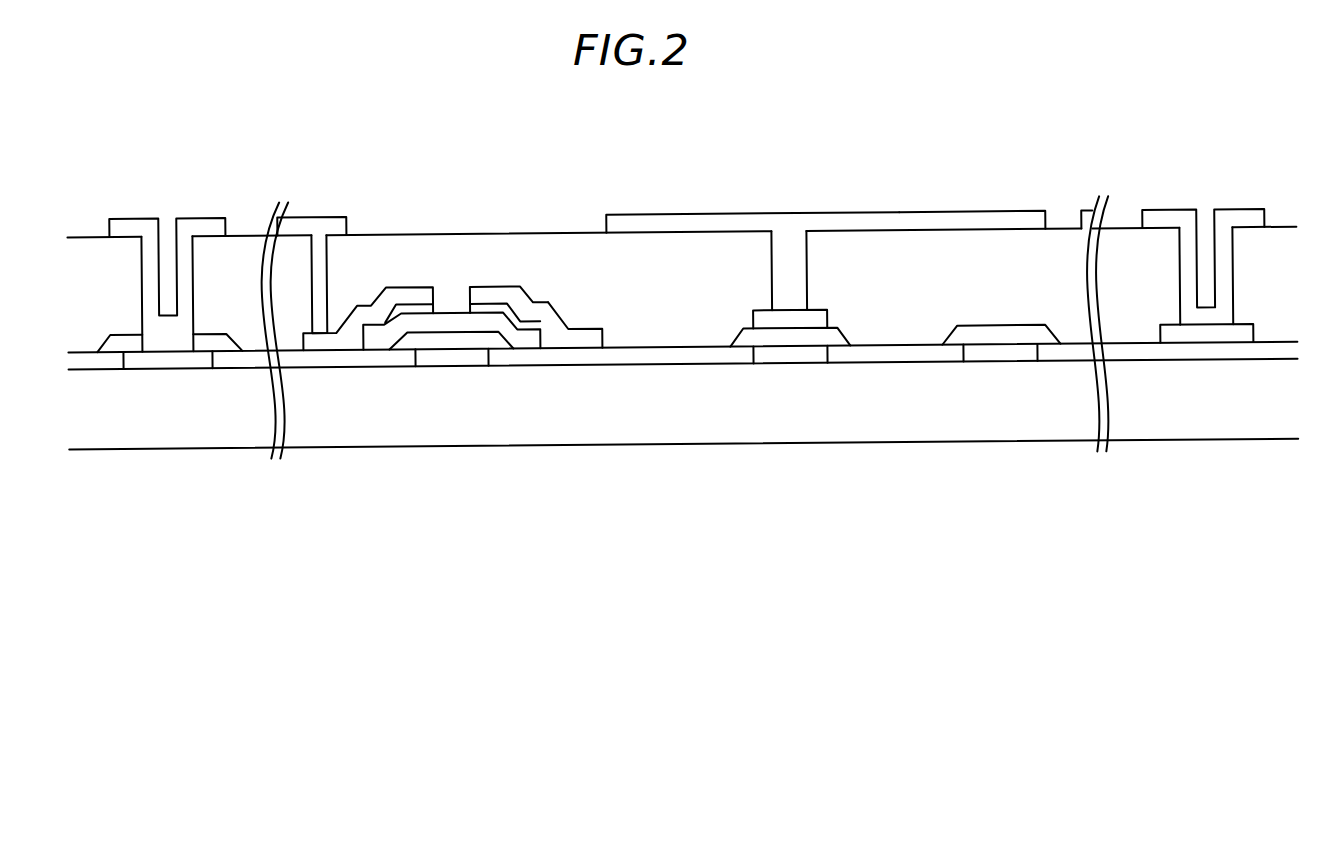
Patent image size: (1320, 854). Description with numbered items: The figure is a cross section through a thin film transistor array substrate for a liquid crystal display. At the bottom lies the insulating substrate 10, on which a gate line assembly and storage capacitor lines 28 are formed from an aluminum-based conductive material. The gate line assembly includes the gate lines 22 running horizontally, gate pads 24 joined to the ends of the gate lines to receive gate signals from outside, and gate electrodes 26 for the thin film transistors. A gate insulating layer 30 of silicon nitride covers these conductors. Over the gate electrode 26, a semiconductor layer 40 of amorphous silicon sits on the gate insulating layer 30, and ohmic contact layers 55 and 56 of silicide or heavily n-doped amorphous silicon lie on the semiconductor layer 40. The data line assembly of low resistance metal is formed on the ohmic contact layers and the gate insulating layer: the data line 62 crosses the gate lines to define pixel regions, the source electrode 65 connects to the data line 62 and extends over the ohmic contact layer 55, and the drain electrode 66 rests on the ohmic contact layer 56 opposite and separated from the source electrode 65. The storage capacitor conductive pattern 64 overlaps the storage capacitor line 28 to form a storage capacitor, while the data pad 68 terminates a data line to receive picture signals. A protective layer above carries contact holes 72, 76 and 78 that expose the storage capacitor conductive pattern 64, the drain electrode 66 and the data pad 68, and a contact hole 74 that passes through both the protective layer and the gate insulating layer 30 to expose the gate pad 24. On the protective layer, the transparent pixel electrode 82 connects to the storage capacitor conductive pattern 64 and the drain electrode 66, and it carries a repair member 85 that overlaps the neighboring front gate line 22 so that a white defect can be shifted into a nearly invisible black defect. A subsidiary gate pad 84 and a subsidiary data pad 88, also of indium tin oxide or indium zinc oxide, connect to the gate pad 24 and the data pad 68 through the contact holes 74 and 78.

The insulating substrate 10 is at (662, 425).
The gate line 22 is at (997, 353).
The gate pad 24 is at (175, 357).
The gate electrode 26 is at (453, 358).
The storage capacitor line 28 is at (787, 357).
The gate insulating layer 30 is at (320, 357).
The semiconductor layer 40 is at (510, 340).
The ohmic contact layer 55 is at (530, 330).
The ohmic contact layer 56 is at (373, 330).
The data line 62 is at (570, 340).
The storage capacitor conductive pattern 64 is at (817, 317).
The source electrode 65 is at (487, 293).
The drain electrode 66 is at (403, 293).
The data pad 68 is at (1210, 333).
The contact hole 72 is at (789, 237).
The contact hole 74 is at (170, 232).
The contact hole 76 is at (321, 237).
The contact hole 78 is at (1207, 218).
The pixel electrode 82 is at (300, 220).
The subsidiary gate pad 84 is at (216, 225).
The repair member 85 is at (1018, 220).
The subsidiary data pad 88 is at (1157, 220).